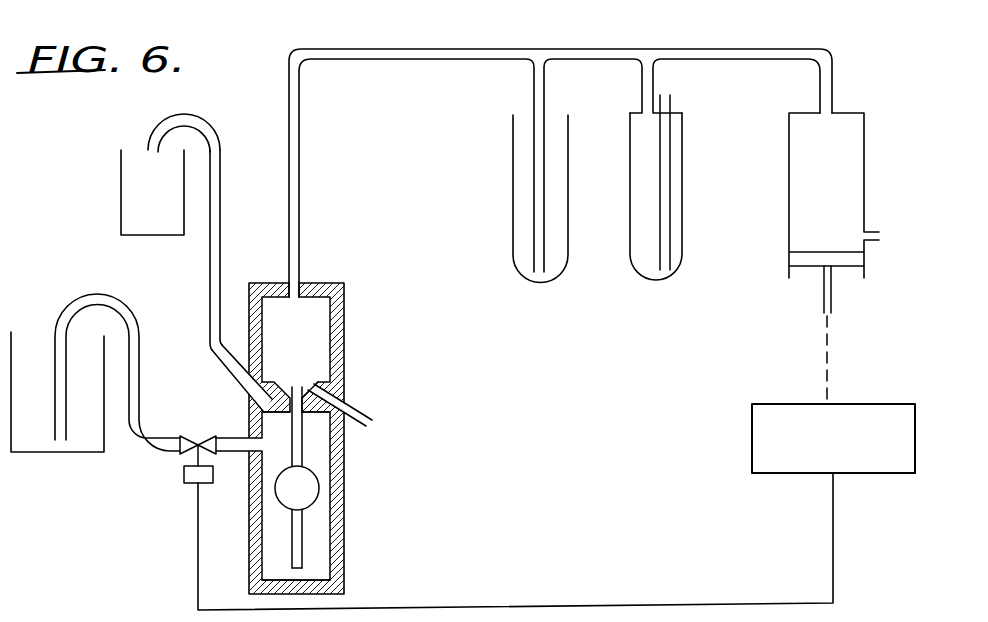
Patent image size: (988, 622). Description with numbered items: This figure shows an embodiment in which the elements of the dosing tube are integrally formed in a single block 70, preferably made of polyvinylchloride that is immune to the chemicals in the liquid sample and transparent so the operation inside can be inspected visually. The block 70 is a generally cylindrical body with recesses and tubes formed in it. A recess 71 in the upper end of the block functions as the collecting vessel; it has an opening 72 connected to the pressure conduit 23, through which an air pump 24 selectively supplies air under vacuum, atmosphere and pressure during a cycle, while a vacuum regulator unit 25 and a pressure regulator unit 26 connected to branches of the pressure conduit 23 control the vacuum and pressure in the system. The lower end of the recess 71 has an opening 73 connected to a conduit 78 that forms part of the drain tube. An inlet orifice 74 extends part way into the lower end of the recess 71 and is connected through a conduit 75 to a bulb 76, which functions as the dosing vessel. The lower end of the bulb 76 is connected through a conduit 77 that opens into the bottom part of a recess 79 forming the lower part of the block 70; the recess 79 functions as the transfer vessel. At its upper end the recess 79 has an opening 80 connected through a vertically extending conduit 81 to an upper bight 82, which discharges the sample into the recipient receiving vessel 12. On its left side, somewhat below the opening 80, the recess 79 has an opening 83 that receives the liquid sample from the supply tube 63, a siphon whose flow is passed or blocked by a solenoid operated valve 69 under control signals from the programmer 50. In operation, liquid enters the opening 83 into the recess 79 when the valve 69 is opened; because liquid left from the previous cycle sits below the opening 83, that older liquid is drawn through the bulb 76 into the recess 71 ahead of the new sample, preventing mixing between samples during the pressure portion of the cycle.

The receiving vessel 12 is at (121, 189).
The pressure conduit 23 is at (390, 29).
The air pump 24 is at (786, 222).
The vacuum regulator unit 25 is at (688, 188).
The pressure regulator unit 26 is at (509, 183).
The programmer 50 is at (778, 404).
The supply tube 63 is at (182, 385).
The solenoid operated valve 69 is at (181, 451).
The block 70 is at (307, 438).
The recess 71 is at (314, 327).
The opening 72 is at (296, 298).
The opening 73 is at (318, 389).
The inlet orifice 74 is at (298, 381).
The conduit 75 is at (303, 445).
The bulb 76 is at (313, 490).
The conduit 77 is at (303, 565).
The conduit 78 is at (368, 410).
The recess 79 is at (322, 539).
The opening 80 is at (263, 413).
The conduit 81 is at (221, 210).
The upper bight 82 is at (189, 115).
The opening 83 is at (268, 448).